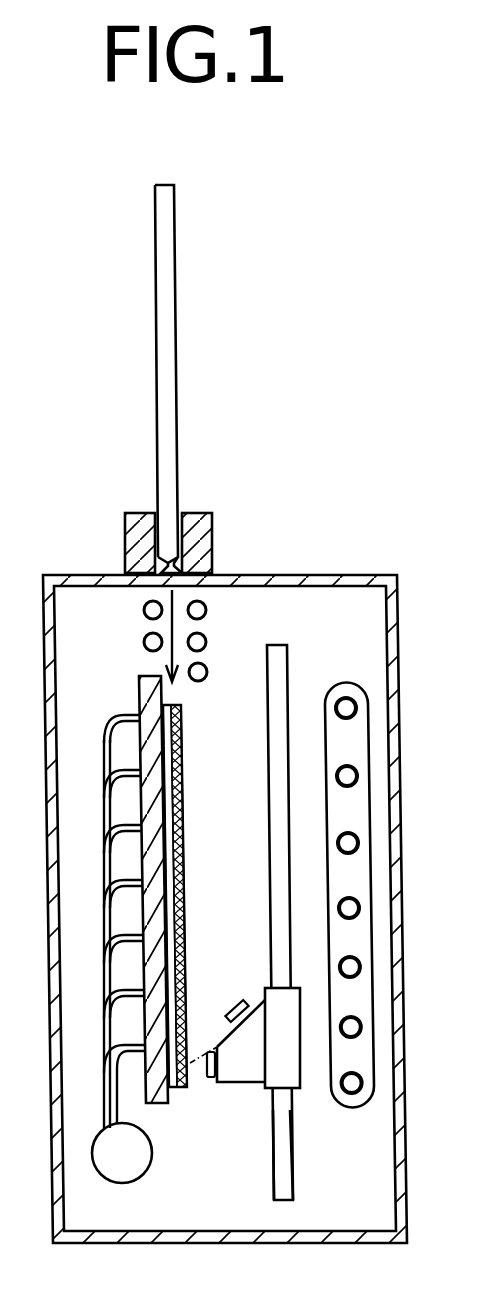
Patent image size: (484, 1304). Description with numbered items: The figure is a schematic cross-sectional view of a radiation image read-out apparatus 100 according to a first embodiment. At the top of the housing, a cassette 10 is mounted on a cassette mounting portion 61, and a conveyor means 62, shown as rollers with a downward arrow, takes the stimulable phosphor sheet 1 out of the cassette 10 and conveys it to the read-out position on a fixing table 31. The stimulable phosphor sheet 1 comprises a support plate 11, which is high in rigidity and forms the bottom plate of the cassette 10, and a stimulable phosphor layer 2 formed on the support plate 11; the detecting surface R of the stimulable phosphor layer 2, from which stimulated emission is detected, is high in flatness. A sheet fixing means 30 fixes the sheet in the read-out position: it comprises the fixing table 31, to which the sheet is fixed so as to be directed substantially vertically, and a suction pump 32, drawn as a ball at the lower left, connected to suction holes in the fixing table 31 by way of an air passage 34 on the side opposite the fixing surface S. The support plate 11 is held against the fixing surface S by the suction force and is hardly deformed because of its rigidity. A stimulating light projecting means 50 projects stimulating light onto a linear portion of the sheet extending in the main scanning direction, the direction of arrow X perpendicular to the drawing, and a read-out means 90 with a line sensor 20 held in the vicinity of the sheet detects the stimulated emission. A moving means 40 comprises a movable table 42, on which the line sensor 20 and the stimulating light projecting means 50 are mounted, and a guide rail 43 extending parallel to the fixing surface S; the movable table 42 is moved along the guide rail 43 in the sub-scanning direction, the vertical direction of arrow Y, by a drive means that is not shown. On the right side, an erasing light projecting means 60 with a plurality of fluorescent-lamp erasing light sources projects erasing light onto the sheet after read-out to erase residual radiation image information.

The radiation image read-out apparatus 100 is at (360, 490).
The cassette 10 is at (177, 306).
The cassette mounting portion 61 is at (205, 512).
The conveyor means 62 is at (223, 630).
The sheet fixing means 30 is at (117, 917).
The fixing table 31 is at (139, 700).
The air passage 34 is at (104, 842).
The suction pump 32 is at (116, 1186).
The stimulable phosphor sheet 1 is at (201, 896).
The support plate 11 is at (173, 802).
The stimulable phosphor layer 2 is at (211, 762).
The fixing surface S is at (175, 700).
The detecting surface R is at (190, 878).
The main scanning direction X is at (196, 910).
The sub-scanning direction Y is at (247, 757).
The erasing light projecting means 60 is at (344, 683).
The moving means 40 is at (266, 1152).
The guide rail 43 is at (294, 1150).
The movable table 42 is at (245, 1088).
The stimulating light projecting means 50 is at (233, 1015).
The line sensor 20 is at (208, 1082).
The read-out means 90 is at (190, 1118).